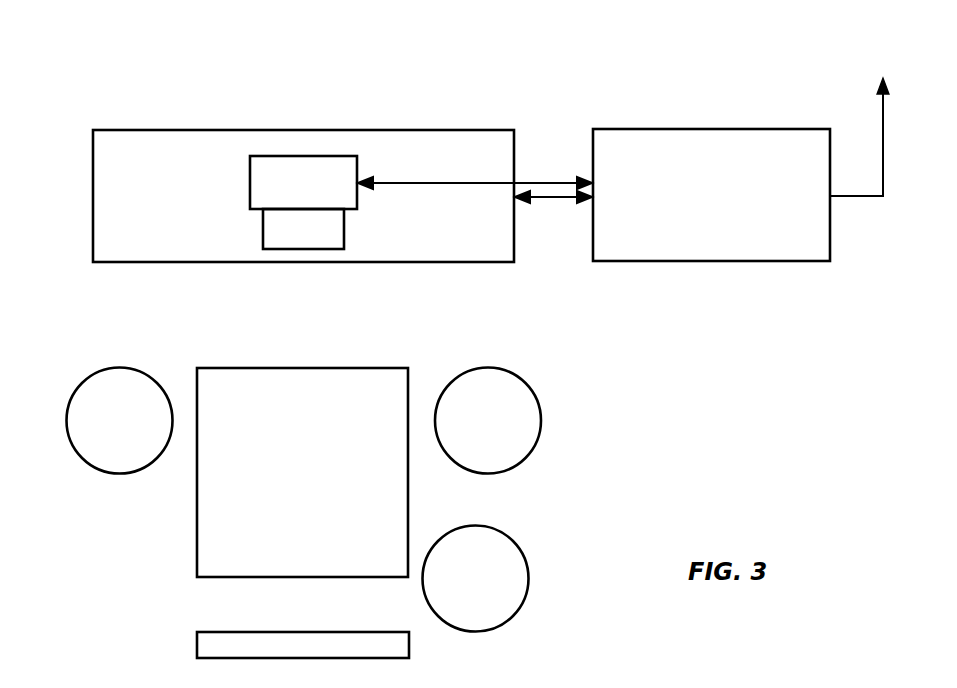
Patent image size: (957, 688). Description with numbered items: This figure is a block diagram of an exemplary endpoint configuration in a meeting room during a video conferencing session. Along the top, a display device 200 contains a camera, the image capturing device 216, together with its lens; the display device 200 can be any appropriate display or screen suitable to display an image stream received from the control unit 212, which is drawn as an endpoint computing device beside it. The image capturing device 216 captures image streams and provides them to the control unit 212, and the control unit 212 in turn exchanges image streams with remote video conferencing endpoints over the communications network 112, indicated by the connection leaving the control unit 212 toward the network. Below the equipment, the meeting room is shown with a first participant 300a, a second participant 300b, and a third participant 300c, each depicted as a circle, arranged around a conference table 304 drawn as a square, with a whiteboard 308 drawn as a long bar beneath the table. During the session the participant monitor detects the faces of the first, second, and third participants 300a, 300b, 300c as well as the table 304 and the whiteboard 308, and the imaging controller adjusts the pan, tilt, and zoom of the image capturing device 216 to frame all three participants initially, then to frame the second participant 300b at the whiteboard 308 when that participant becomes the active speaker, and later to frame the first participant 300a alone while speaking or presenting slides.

The display device 200 is at (303, 176).
The image capturing device 216 is at (303, 173).
The control unit 212 is at (711, 175).
The communications network 112 is at (882, 128).
The first participant 300a is at (120, 401).
The second participant 300b is at (495, 579).
The third participant 300c is at (488, 401).
The conference table 304 is at (302, 452).
The whiteboard 308 is at (283, 628).